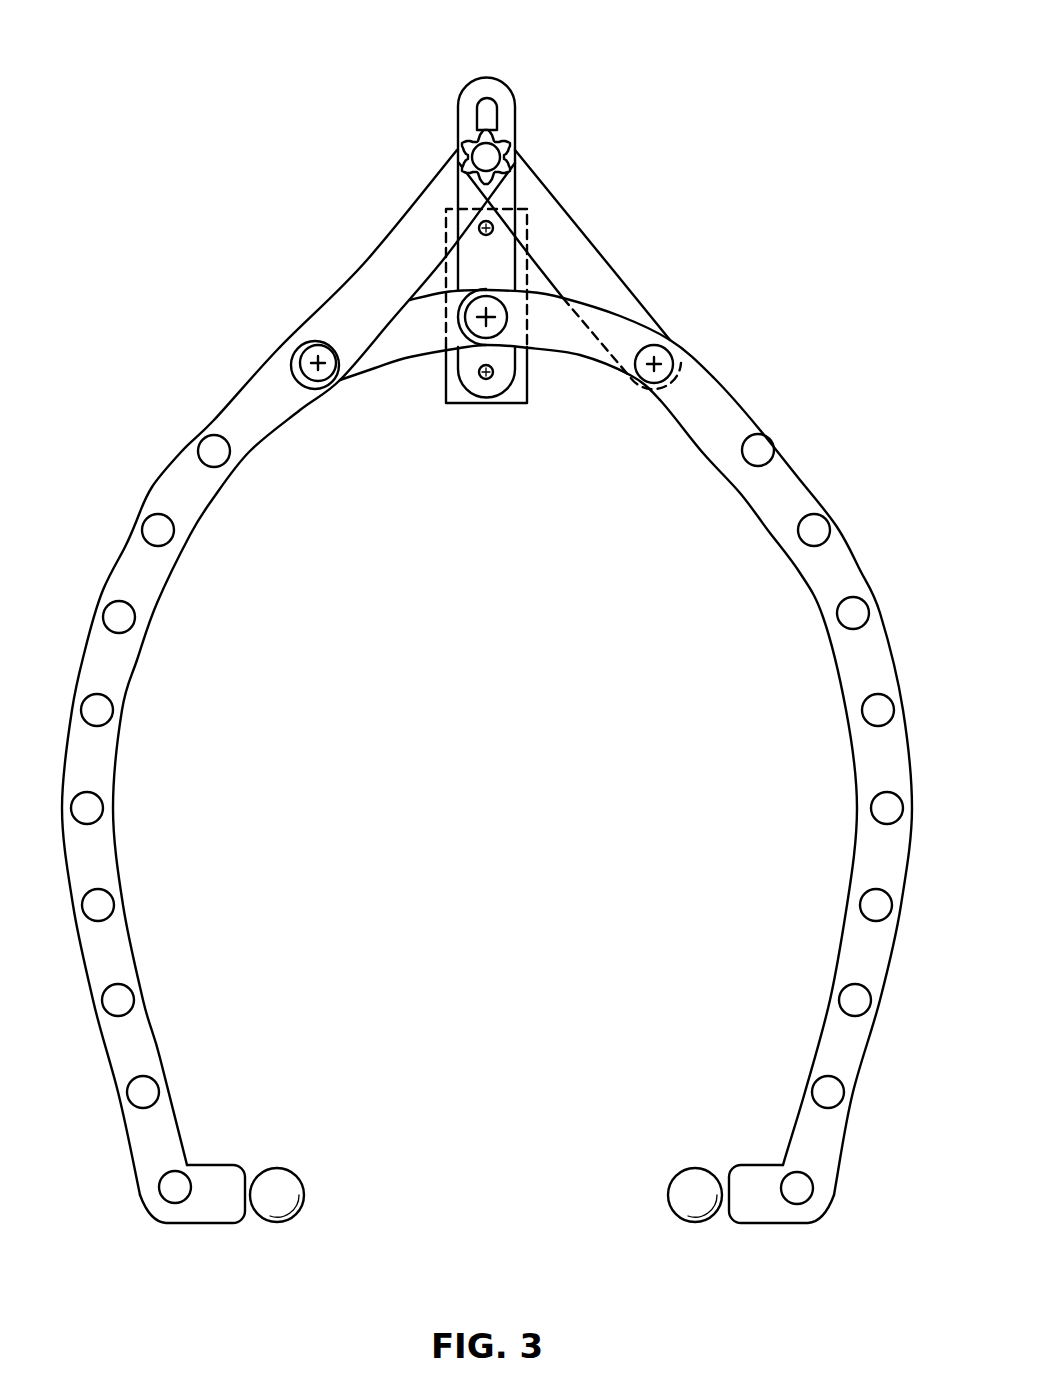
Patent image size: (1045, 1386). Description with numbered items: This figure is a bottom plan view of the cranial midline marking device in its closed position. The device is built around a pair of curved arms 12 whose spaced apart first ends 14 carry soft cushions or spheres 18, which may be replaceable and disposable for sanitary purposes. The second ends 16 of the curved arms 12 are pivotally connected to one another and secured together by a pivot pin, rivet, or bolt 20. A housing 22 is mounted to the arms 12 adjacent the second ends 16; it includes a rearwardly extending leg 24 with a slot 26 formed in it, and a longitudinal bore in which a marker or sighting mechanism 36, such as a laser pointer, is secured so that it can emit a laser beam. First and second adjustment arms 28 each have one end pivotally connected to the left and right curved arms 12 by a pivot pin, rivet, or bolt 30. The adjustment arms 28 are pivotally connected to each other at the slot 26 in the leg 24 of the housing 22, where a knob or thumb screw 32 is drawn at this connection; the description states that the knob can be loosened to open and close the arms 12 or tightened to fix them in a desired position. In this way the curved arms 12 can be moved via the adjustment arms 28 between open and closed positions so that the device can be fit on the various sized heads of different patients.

The curved arm 12 is at (108, 776).
The first end 14 is at (207, 1213).
The second end 16 is at (393, 350).
The soft cushion or sphere 18 is at (303, 1198).
The pivot pin, rivet, or bolt 20 is at (465, 316).
The housing 22 is at (500, 242).
The rearwardly extending leg 24 is at (507, 133).
The slot 26 is at (487, 107).
The adjustment arm 28 is at (404, 230).
The pivot pin, rivet, or bolt 30 is at (305, 355).
The knob 32 is at (460, 152).
The marker or sighting mechanism 36 is at (477, 390).